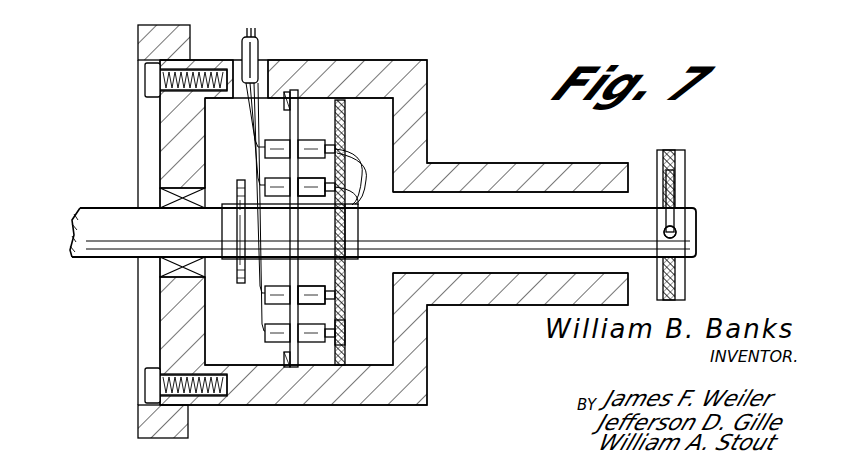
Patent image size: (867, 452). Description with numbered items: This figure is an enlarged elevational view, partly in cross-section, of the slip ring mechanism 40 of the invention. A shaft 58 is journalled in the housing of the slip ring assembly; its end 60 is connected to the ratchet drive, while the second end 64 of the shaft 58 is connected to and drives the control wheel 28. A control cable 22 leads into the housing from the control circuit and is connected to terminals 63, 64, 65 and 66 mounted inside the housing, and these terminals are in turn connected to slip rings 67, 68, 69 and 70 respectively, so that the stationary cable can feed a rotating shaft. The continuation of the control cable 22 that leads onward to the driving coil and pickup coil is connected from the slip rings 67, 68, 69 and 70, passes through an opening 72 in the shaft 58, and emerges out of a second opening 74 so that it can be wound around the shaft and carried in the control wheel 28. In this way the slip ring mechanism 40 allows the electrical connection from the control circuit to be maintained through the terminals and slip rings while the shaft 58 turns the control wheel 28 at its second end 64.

The control cable 22 is at (260, 42).
The control wheel 28 is at (686, 181).
The slip ring mechanism 40 is at (432, 64).
The shaft 58 is at (107, 207).
The end of shaft 60 is at (78, 206).
The terminal 63 is at (312, 140).
The second end of shaft / terminal 64 is at (278, 192).
The terminal 65 is at (311, 287).
The terminal 66 is at (282, 344).
The slip ring 67 is at (360, 142).
The slip ring 68 is at (333, 200).
The slip ring 69 is at (346, 300).
The slip ring 70 is at (346, 334).
The opening in shaft 72 is at (400, 202).
The second opening 74 is at (694, 236).